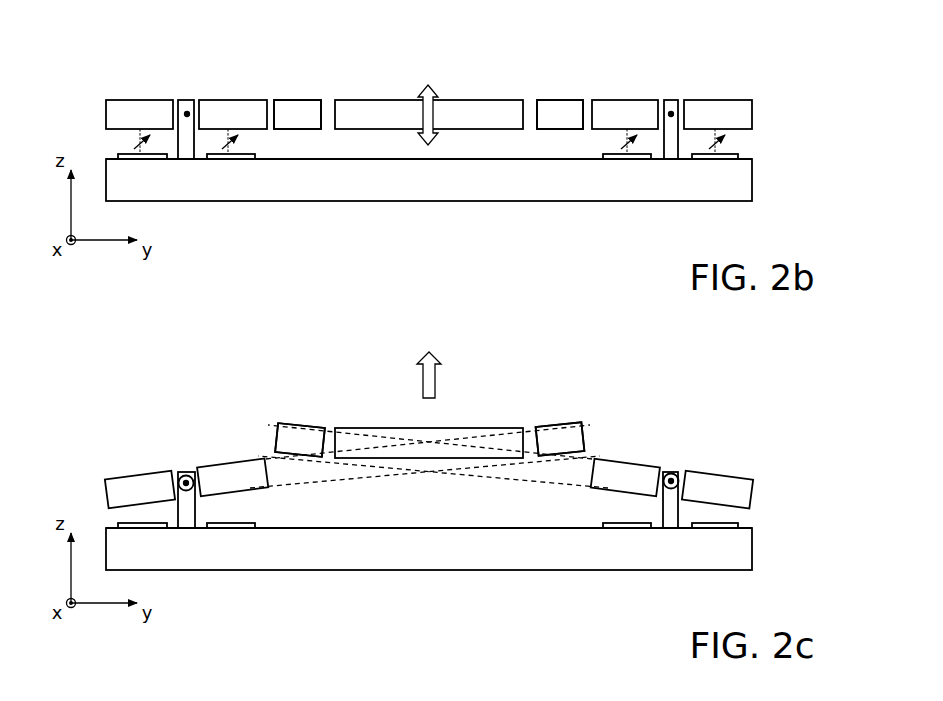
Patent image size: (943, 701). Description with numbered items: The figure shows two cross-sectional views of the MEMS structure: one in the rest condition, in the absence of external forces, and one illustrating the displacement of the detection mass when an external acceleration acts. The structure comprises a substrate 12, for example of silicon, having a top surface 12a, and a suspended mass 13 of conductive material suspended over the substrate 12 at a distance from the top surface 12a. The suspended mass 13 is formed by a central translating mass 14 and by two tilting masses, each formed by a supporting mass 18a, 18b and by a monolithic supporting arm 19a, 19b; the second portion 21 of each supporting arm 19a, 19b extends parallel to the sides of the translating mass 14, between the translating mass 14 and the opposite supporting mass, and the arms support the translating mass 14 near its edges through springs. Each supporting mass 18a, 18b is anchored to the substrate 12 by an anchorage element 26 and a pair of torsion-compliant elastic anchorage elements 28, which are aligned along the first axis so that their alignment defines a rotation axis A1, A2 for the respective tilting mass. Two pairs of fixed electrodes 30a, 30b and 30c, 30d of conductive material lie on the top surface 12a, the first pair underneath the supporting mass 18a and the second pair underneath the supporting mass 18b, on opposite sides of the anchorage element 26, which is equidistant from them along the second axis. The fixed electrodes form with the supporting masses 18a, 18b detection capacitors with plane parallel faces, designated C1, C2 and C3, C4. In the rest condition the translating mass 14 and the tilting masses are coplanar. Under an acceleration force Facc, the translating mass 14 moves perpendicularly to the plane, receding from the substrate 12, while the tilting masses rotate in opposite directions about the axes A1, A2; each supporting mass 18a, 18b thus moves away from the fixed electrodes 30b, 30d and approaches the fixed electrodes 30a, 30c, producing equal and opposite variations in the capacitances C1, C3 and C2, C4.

In FIG. 2b, the substrate 12 is at (752, 190).
In FIG. 2c, the substrate 12 is at (752, 555).
In FIG. 2b, the top surface 12a is at (752, 153).
In FIG. 2c, the top surface 12a is at (750, 522).
In FIG. 2b, the suspended mass 13 is at (459, 92).
In FIG. 2c, the suspended mass 13 is at (451, 446).
In FIG. 2b, the translating mass 14 is at (470, 110).
In FIG. 2c, the translating mass 14 is at (445, 428).
In FIG. 2b, the supporting mass 18a is at (128, 108).
In FIG. 2c, the supporting mass 18a is at (126, 480).
In FIG. 2b, the supporting mass 18b is at (732, 108).
In FIG. 2c, the supporting mass 18b is at (735, 487).
In FIG. 2b, the supporting arm 19a is at (563, 108).
In FIG. 2c, the supporting arm 19a is at (560, 437).
In FIG. 2b, the supporting arm 19b is at (303, 108).
In FIG. 2c, the supporting arm 19b is at (297, 440).
In FIG. 2b, the second portion 21 is at (428, 114).
In FIG. 2c, the second portion 21 is at (429, 439).
In FIG. 2b, the anchorage element 26 is at (190, 101).
In FIG. 2c, the anchorage element 26 is at (193, 471).
In FIG. 2c, the elastic anchorage elements 28 is at (179, 478).
In FIG. 2b, the fixed electrode 30a is at (160, 159).
In FIG. 2c, the fixed electrode 30a is at (160, 528).
In FIG. 2b, the fixed electrode 30b is at (232, 159).
In FIG. 2c, the fixed electrode 30b is at (232, 528).
In FIG. 2b, the fixed electrode 30c is at (705, 159).
In FIG. 2c, the fixed electrode 30c is at (705, 528).
In FIG. 2b, the fixed electrode 30d is at (617, 159).
In FIG. 2c, the fixed electrode 30d is at (617, 528).
In FIG. 2b, the rotation axis A1 is at (187, 110).
In FIG. 2c, the rotation axis A1 is at (186, 476).
In FIG. 2b, the rotation axis A2 is at (671, 110).
In FIG. 2c, the rotation axis A2 is at (670, 474).
In FIG. 2b, the detection capacitor C1 is at (136, 140).
In FIG. 2b, the detection capacitor C2 is at (235, 140).
In FIG. 2b, the detection capacitor C3 is at (722, 140).
In FIG. 2b, the detection capacitor C4 is at (622, 138).
In FIG. 2c, the acceleration force Facc is at (436, 380).